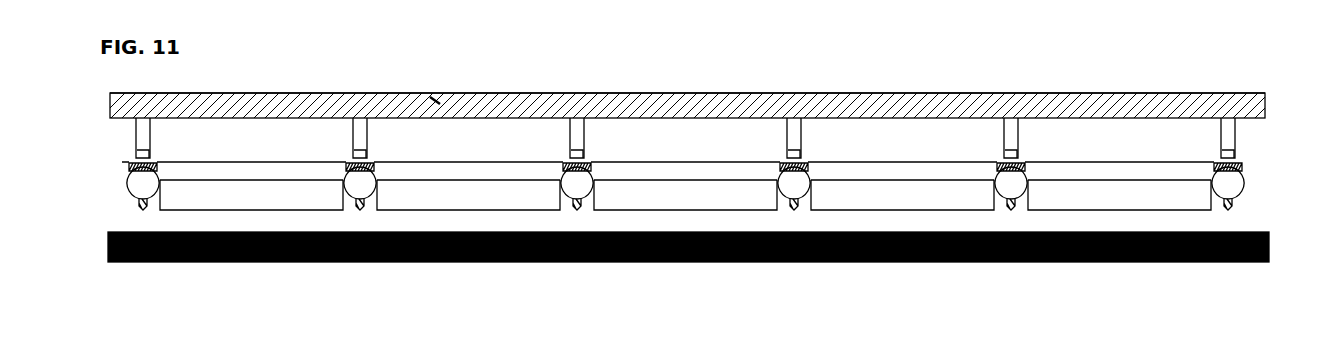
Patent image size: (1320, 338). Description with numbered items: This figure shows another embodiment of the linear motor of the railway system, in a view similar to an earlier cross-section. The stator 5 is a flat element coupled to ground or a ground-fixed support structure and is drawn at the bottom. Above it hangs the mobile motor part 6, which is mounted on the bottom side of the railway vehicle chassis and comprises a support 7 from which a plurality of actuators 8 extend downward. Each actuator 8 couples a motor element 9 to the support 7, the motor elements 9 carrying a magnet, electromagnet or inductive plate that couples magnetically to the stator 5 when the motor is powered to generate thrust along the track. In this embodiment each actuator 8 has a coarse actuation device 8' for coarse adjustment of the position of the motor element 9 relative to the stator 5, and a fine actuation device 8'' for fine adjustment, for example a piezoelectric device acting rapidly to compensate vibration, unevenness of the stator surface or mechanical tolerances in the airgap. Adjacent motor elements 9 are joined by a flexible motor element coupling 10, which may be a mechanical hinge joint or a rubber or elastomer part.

The stator 5 is at (1108, 270).
The mobile motor part 6 is at (430, 62).
The support 7 is at (650, 86).
The actuator 8 is at (716, 123).
The stem of connecting element 8' is at (685, 104).
The head of connecting element 8'' is at (718, 177).
The motor element 9 is at (875, 155).
The flexible motor element coupling 10 is at (1230, 187).